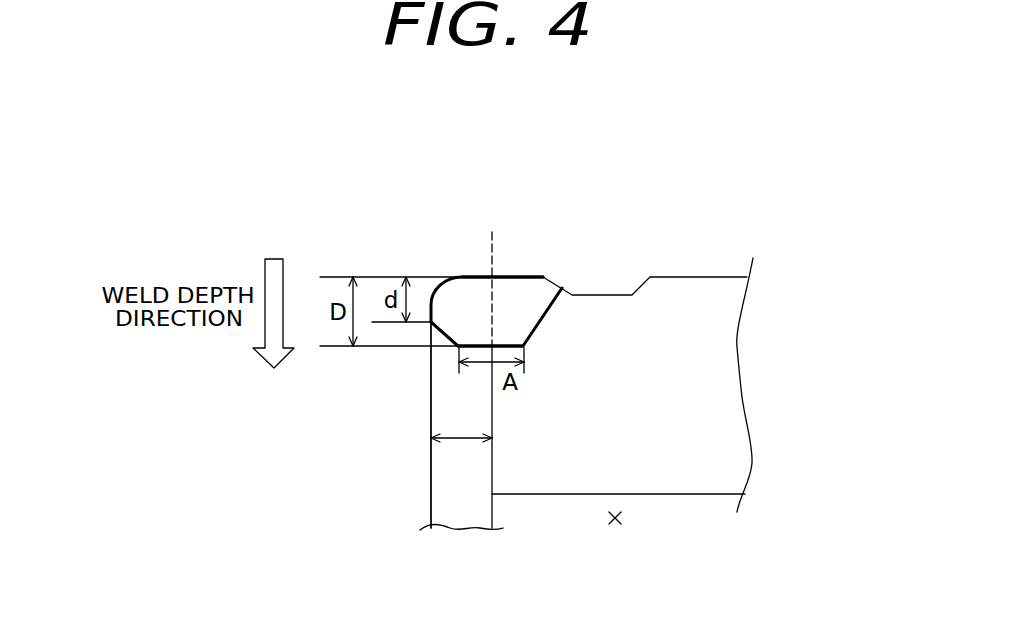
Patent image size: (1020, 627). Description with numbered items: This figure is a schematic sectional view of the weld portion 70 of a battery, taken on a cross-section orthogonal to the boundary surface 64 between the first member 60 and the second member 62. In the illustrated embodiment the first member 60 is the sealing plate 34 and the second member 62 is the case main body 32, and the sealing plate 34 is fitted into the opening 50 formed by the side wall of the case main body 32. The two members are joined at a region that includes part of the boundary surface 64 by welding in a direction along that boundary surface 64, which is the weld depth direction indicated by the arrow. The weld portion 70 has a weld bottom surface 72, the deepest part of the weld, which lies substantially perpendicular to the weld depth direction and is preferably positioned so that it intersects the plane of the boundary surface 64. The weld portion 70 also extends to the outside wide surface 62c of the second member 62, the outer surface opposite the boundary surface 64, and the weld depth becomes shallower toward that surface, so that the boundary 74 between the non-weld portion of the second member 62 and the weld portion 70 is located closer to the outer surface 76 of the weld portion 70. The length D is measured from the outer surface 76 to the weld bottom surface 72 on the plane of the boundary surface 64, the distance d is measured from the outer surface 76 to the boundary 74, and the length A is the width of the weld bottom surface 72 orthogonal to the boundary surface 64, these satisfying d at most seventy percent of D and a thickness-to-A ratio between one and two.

The weld portion 70 is at (528, 298).
The outer surface of the weld portion 76 is at (508, 275).
The boundary between non-weld portion and weld portion 74 is at (448, 337).
The weld bottom surface 72 is at (480, 348).
The first member 60 is at (623, 365).
The sealing plate 34 is at (667, 293).
The second member 62 is at (399, 426).
The case main body 32 is at (440, 487).
The outside wide surface of the second member 62c is at (431, 458).
The boundary surface 64 is at (492, 415).
The opening 50 is at (612, 527).